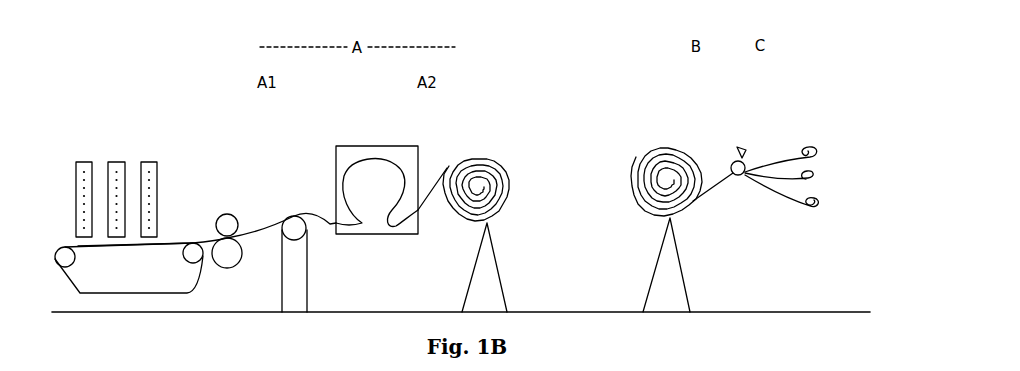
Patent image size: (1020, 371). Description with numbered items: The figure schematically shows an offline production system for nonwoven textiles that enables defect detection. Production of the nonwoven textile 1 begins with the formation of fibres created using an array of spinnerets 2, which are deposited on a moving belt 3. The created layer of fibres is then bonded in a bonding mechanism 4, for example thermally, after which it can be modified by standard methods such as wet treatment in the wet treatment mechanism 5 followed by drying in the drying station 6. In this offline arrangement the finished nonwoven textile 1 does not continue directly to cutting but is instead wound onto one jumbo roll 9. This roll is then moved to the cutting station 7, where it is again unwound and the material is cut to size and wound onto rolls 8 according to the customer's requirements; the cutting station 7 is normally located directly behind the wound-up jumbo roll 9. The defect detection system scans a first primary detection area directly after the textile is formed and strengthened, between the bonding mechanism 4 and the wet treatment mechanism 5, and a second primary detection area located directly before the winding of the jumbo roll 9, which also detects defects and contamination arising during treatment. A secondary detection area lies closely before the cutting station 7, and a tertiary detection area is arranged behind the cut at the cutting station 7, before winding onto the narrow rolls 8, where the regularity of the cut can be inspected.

The nonwoven textile 1 is at (184, 242).
The array of spinnerets 2 is at (91, 150).
The moving belt 3 is at (63, 247).
The bonding mechanism 4 is at (230, 215).
The wet treatment mechanism 5 is at (295, 215).
The drying station 6 is at (385, 143).
The cutting station 7 is at (745, 165).
The rolls 8 is at (818, 150).
The jumbo roll 9 is at (488, 148).